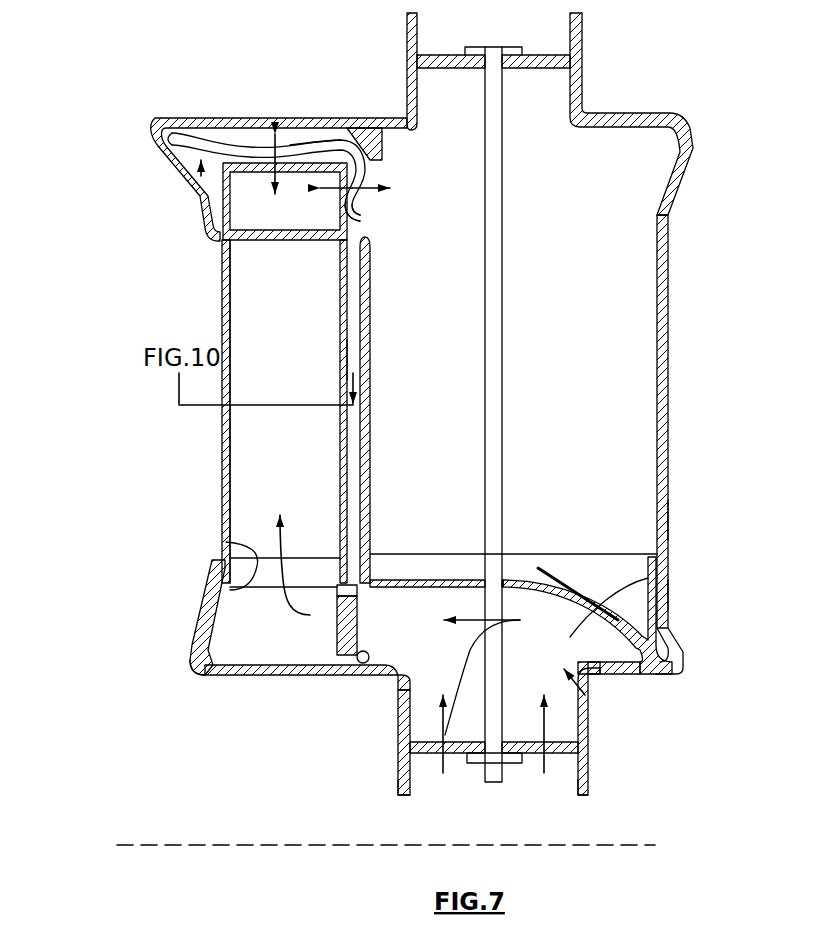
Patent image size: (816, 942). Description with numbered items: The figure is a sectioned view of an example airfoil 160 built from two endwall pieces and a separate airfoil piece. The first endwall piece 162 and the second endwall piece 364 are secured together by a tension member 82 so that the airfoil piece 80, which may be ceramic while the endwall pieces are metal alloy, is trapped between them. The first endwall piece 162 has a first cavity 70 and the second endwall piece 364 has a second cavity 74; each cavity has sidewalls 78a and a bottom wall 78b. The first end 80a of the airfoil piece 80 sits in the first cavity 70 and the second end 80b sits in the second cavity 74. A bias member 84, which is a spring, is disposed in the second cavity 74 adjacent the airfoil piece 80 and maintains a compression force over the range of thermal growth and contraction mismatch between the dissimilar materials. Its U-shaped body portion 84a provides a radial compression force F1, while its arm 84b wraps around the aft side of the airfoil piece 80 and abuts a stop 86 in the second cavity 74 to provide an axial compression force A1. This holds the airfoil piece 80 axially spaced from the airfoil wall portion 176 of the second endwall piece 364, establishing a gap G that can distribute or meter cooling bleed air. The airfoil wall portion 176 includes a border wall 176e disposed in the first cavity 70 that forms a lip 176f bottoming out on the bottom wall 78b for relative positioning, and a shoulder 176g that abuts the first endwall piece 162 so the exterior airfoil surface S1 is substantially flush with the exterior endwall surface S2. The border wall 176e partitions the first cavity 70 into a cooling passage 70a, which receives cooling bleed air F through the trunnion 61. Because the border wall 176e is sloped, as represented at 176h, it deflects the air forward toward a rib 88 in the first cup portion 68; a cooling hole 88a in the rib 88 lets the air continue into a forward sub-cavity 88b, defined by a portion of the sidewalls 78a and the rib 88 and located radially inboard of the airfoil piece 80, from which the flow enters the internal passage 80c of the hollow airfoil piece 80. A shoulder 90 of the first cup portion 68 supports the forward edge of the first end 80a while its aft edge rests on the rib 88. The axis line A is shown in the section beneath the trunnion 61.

The second endwall piece 364 is at (640, 120).
The tension member 82 is at (503, 400).
The second cavity 74 is at (199, 197).
The stop 86 is at (385, 150).
The bias member 84 is at (212, 147).
The U-shaped body portion 84a is at (316, 150).
The first arm 84b is at (367, 207).
The radial compression force F1 is at (270, 150).
The axial compression force A1 is at (378, 180).
The second end 80b is at (221, 198).
The airfoil piece 80 is at (222, 487).
The internal passage 80c is at (265, 450).
The first end 80a is at (229, 570).
The shoulder 90 is at (225, 542).
The gap G is at (353, 358).
The airfoil wall portion 176 is at (668, 315).
The shoulder 176g is at (667, 552).
The border wall 176e is at (568, 637).
The slope 176h is at (582, 596).
The lip 176f is at (658, 668).
The first endwall piece 162 is at (670, 640).
The exterior airfoil surface S1 is at (668, 520).
The exterior endwall surface S2 is at (668, 592).
The bottom wall 78b is at (605, 673).
The sidewalls 78a is at (202, 604).
The first cup portion 68 is at (286, 682).
The forward sub-cavity 88b is at (209, 672).
The rib 88 is at (373, 668).
The cooling hole 88a is at (342, 634).
The first cavity 70 is at (588, 702).
The cooling passage 70a is at (410, 739).
The trunnion 61 is at (588, 781).
The cooling bleed air F is at (284, 538).
The axis A is at (212, 845).
The airfoil 160 is at (118, 668).